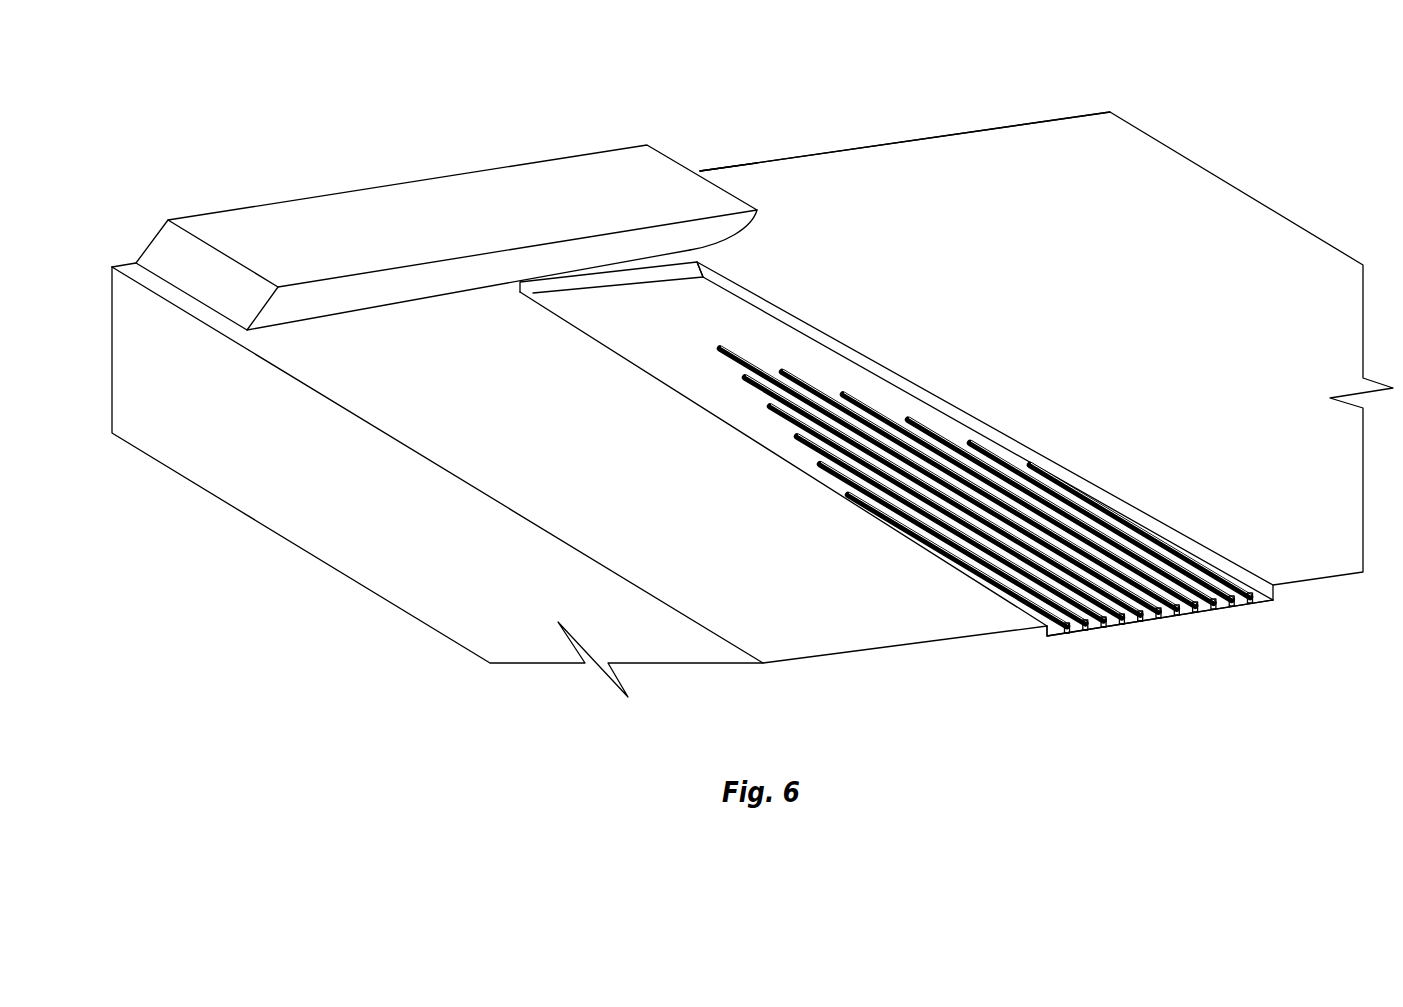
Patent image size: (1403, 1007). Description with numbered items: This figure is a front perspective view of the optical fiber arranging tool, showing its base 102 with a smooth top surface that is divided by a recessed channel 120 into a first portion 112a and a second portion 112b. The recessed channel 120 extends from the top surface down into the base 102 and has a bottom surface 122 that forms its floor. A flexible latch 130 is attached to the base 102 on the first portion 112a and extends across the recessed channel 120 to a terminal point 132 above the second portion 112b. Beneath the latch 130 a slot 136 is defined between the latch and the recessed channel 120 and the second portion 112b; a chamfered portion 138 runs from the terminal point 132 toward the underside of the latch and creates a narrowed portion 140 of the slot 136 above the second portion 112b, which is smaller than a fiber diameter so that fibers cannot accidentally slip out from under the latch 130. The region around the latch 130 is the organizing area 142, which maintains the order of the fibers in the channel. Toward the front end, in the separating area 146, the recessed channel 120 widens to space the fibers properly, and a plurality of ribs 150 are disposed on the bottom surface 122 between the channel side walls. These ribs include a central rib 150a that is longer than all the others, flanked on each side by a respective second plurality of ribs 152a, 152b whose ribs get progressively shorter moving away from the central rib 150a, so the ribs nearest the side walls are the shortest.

The base 102 is at (752, 367).
The first portion of the top surface 112a is at (574, 435).
The second portion of the top surface 112b is at (1079, 254).
The recessed channel 120 is at (787, 462).
The bottom surface of the recessed channel 122 is at (627, 339).
The latch 130 is at (481, 203).
The terminal point 132 is at (724, 203).
The slot 136 is at (580, 274).
The chamfered portion 138 is at (752, 241).
The narrowed portion 140 is at (697, 253).
The organizing area 142 is at (757, 188).
The separating area 146 is at (997, 400).
The plurality of ribs 150 is at (1009, 518).
The central rib 150a is at (1153, 622).
The second plurality of ribs 152a is at (1149, 624).
The second plurality of ribs 152b is at (991, 518).